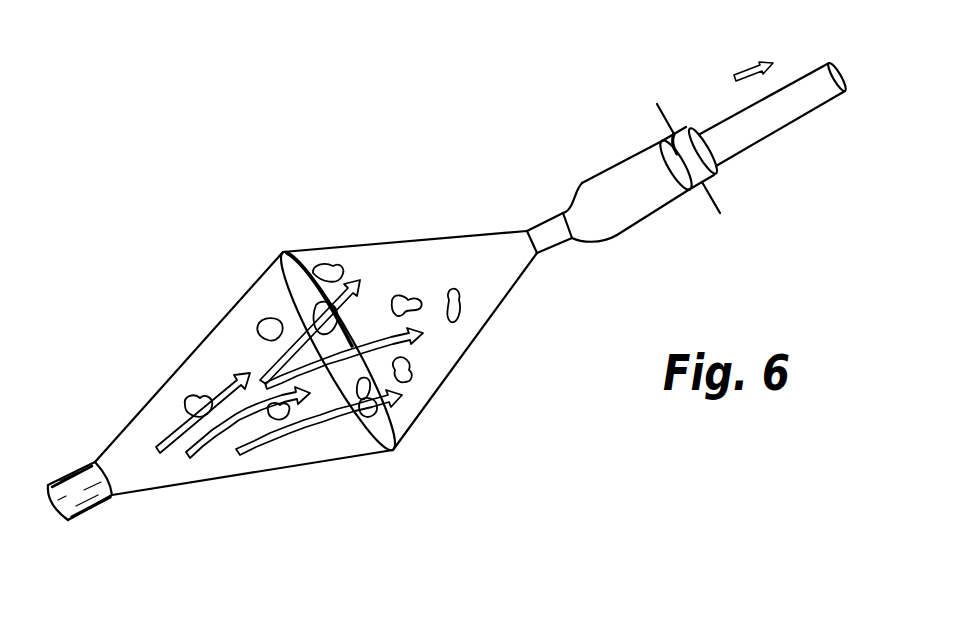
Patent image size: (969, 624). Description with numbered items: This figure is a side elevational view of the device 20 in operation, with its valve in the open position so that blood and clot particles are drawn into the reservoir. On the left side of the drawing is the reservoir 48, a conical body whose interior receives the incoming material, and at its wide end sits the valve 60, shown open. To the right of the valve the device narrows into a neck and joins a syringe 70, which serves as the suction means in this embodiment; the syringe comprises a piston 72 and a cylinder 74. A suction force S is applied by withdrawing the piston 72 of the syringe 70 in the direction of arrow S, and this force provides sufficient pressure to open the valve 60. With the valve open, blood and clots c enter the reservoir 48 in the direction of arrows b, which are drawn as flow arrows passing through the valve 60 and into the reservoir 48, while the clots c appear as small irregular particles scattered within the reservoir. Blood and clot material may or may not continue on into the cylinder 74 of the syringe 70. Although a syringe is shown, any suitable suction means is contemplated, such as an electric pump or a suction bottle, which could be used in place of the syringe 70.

The filter assembly 20 is at (448, 290).
The reservoir 48 is at (463, 267).
The valve 60 is at (418, 439).
The syringe 70 is at (631, 187).
The piston 72 is at (667, 153).
The cylinder 74 is at (660, 196).
The suction force S is at (737, 72).
The arrows b is at (300, 343).
The clots c is at (393, 302).